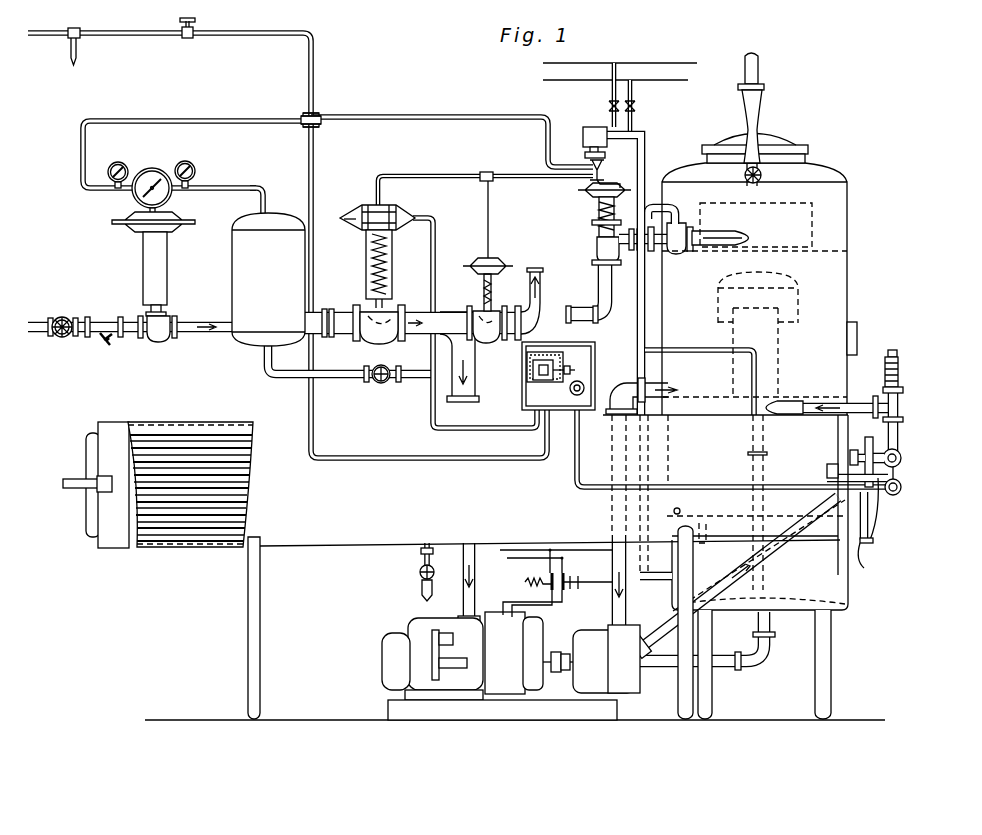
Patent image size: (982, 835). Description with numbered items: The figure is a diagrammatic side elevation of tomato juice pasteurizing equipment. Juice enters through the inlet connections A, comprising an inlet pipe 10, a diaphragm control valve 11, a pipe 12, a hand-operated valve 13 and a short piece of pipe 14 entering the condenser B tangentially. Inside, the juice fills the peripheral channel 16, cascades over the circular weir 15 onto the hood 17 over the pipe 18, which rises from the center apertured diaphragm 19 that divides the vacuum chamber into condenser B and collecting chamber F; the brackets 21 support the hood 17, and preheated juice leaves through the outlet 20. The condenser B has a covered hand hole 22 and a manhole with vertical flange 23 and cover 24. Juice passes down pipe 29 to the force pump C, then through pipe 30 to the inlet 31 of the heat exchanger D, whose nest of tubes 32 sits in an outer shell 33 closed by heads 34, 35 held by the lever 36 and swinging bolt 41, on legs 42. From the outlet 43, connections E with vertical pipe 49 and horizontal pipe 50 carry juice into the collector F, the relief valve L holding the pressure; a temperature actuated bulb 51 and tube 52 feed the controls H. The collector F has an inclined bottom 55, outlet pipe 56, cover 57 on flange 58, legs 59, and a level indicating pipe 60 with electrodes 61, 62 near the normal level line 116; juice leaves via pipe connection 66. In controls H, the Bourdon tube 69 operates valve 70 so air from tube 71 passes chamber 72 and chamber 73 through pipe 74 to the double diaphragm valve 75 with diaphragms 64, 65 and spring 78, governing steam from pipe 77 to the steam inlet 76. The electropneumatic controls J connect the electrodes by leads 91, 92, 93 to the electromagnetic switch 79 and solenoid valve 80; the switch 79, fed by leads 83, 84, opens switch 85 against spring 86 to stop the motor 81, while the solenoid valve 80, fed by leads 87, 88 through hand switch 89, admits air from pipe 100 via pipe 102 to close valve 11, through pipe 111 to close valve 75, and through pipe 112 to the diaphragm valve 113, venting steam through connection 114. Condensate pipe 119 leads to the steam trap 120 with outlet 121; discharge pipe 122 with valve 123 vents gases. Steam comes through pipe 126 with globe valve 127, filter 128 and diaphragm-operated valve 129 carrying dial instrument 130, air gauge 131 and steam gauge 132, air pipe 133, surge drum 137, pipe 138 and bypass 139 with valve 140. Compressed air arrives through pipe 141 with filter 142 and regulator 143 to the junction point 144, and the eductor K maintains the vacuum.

The inlet pipe 10 is at (582, 307).
The diaphragm control valve 11 is at (593, 263).
The pipe 12 is at (612, 224).
The hand-operated valve 13 is at (672, 254).
The short piece of pipe 14 is at (728, 244).
The circular weir 15 is at (804, 206).
The peripheral channel 16 is at (838, 244).
The hood 17 is at (798, 300).
The pipe 18 is at (781, 355).
The center apertured diaphragm 19 is at (801, 397).
The outlet 20 is at (652, 384).
The brackets 21 is at (798, 329).
The covered hand hole 22 is at (857, 336).
The vertical flange 23 is at (808, 158).
The cover 24 is at (790, 143).
The pipe 29 is at (628, 620).
The pipe 30 is at (784, 556).
The inlet 31 is at (865, 448).
The nest of tubes 32 is at (205, 450).
The outer shell 33 is at (310, 530).
The head 34 is at (88, 522).
The head 35 is at (874, 530).
The pivotally mounted lever 36 is at (78, 492).
The swinging bolt 41 is at (860, 470).
The legs 42 is at (247, 650).
The outlet 43 is at (872, 518).
The vertical pipe 49 is at (900, 427).
The second horizontal pipe 50 is at (850, 403).
The temperature actuated bulb 51 is at (902, 486).
The tube 52 is at (714, 486).
The inclined bottom 55 is at (802, 614).
The outlet pipe 56 is at (754, 631).
The cover 57 is at (874, 545).
The peripheral flange 58 is at (870, 566).
The legs 59 is at (831, 657).
The level indicating pipe 60 is at (780, 584).
The long electrode 61 is at (772, 522).
The short electrode 62 is at (752, 519).
The diaphragm 64 is at (365, 207).
The diaphragm 65 is at (356, 225).
The pipe connection 66 is at (672, 667).
The Bourdon tube 69 is at (590, 380).
The valve 70 is at (560, 358).
The tube 71 is at (510, 459).
The chamber 72 is at (533, 379).
The chamber 73 is at (527, 369).
The pipe 74 is at (466, 429).
The double diaphragm valve 75 is at (392, 260).
The heat exchanger steam inlet 76 is at (466, 373).
The pipe 77 is at (342, 318).
The spring 78 is at (391, 286).
The electromagnetic switch 79 is at (582, 591).
The solenoid valve 80 is at (583, 130).
The electric motor 81 is at (510, 692).
The supply lead 83 is at (575, 537).
The supply lead 84 is at (590, 556).
The switch 85 is at (565, 579).
The spring 86 is at (526, 582).
The supply lead 87 is at (660, 63).
The supply lead 88 is at (682, 80).
The hand-operated switch 89 is at (636, 105).
The pair of leads 91 is at (715, 356).
The lead 92 is at (650, 466).
The lead 93 is at (646, 317).
The pipe 100 is at (488, 116).
The pipe 102 is at (602, 175).
The pipe 111 is at (458, 176).
The pipe 112 is at (489, 230).
The diaphragm valve 113 is at (482, 291).
The pipe connection 114 is at (532, 322).
The line 116 is at (702, 543).
The pipe 119 is at (463, 604).
The steam trap 120 is at (394, 672).
The discharge outlet 121 is at (450, 668).
The discharge pipe 122 is at (424, 598).
The valve 123 is at (420, 577).
The steam pipe 126 is at (112, 306).
The globe valve 127 is at (64, 316).
The filter 128 is at (103, 346).
The diaphragm-operated valve 129 is at (143, 263).
The central dial instrument 130 is at (153, 168).
The air pressure gauge 131 is at (118, 162).
The steam gauge 132 is at (193, 164).
The pipe 133 is at (82, 142).
The surge drum 137 is at (234, 248).
The pipe 138 is at (264, 186).
The bypass 139 is at (350, 382).
The valve 140 is at (381, 384).
The pipe 141 is at (309, 35).
The filter 142 is at (73, 66).
The pressure regulator 143 is at (188, 40).
The junction point 144 is at (320, 115).
The inlet connections A is at (588, 247).
The condenser B is at (853, 211).
The force pump C is at (618, 687).
The flash heat exchanger D is at (381, 536).
The connections E is at (909, 446).
The collecting chamber F is at (857, 588).
The controls H is at (596, 362).
The electropneumatic controls J is at (689, 365).
The eductor K is at (773, 119).
The relief valve L is at (912, 365).